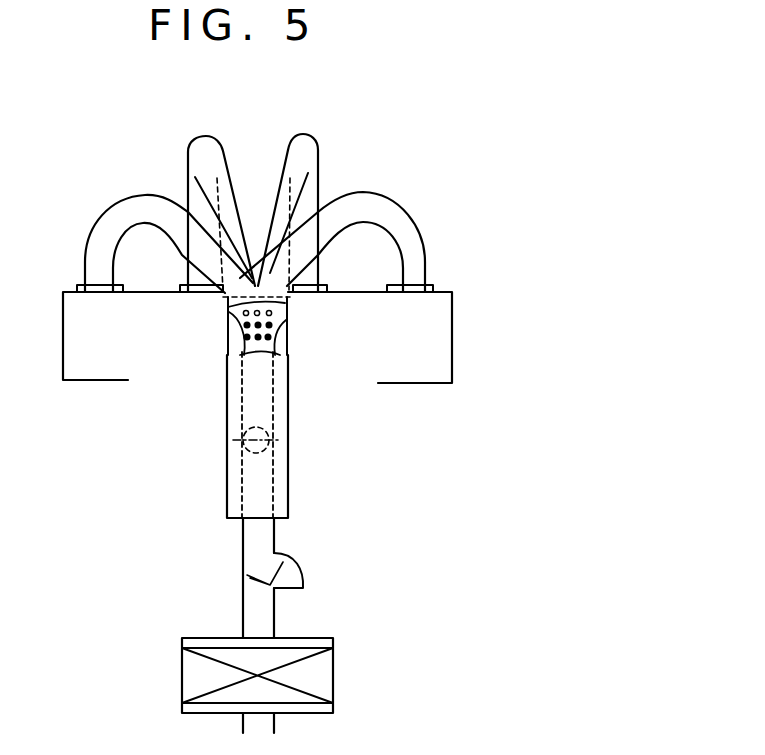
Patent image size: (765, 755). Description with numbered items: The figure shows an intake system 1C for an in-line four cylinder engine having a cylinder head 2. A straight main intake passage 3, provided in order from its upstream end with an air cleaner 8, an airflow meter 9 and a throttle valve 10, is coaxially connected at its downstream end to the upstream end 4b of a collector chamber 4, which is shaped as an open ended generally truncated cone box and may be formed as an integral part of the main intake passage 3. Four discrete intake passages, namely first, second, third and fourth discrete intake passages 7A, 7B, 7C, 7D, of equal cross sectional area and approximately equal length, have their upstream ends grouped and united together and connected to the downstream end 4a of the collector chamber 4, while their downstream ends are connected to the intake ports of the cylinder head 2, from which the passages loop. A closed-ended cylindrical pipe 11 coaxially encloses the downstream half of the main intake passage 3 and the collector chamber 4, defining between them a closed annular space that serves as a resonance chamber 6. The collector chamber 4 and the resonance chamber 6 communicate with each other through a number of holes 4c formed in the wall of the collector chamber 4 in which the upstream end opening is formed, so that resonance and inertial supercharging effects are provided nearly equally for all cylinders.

The intake system 1C is at (373, 180).
The cylinder head 2 is at (453, 323).
The main intake passage 3 is at (242, 553).
The collector chamber 4 is at (230, 310).
The downstream end of collector chamber 4a is at (287, 312).
The upstream end of collector chamber 4b is at (247, 353).
The holes 4c is at (287, 343).
The resonance chamber 6 is at (230, 424).
The first discrete intake passage 7A is at (405, 217).
The second discrete intake passage 7B is at (317, 145).
The third discrete intake passage 7C is at (188, 178).
The fourth discrete intake passage 7D is at (97, 228).
The air cleaner 8 is at (333, 667).
The airflow meter 9 is at (292, 573).
The throttle valve 10 is at (262, 455).
The closed-ended cylindrical pipe 11 is at (226, 478).